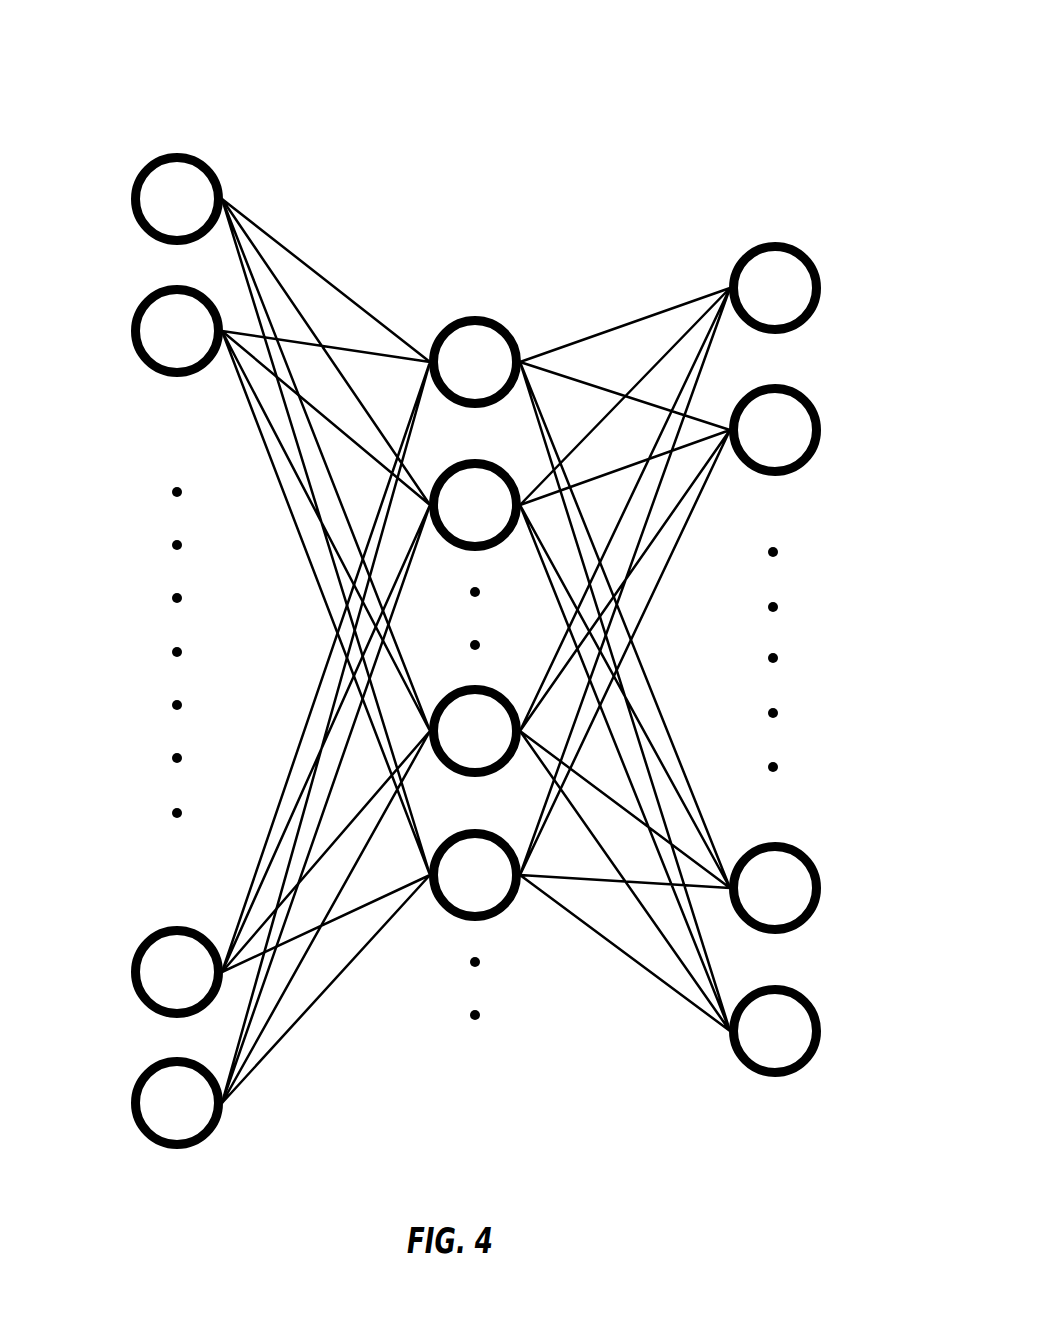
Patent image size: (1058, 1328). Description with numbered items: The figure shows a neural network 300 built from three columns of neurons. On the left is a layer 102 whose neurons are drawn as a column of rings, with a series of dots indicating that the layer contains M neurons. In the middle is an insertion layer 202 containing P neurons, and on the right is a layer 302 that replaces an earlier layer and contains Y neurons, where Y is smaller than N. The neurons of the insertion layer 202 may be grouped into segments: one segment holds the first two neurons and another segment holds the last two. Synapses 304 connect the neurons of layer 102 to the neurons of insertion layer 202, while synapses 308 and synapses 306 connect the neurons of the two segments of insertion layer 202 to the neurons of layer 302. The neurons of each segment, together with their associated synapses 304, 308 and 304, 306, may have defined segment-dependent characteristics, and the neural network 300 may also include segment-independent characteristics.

The neural network 300 is at (812, 50).
The layer 102 is at (180, 138).
The insertion layer 202 is at (476, 268).
The layer 302 is at (778, 223).
The synapses 304 is at (283, 290).
The synapses 306 is at (650, 507).
The synapses 308 is at (613, 300).